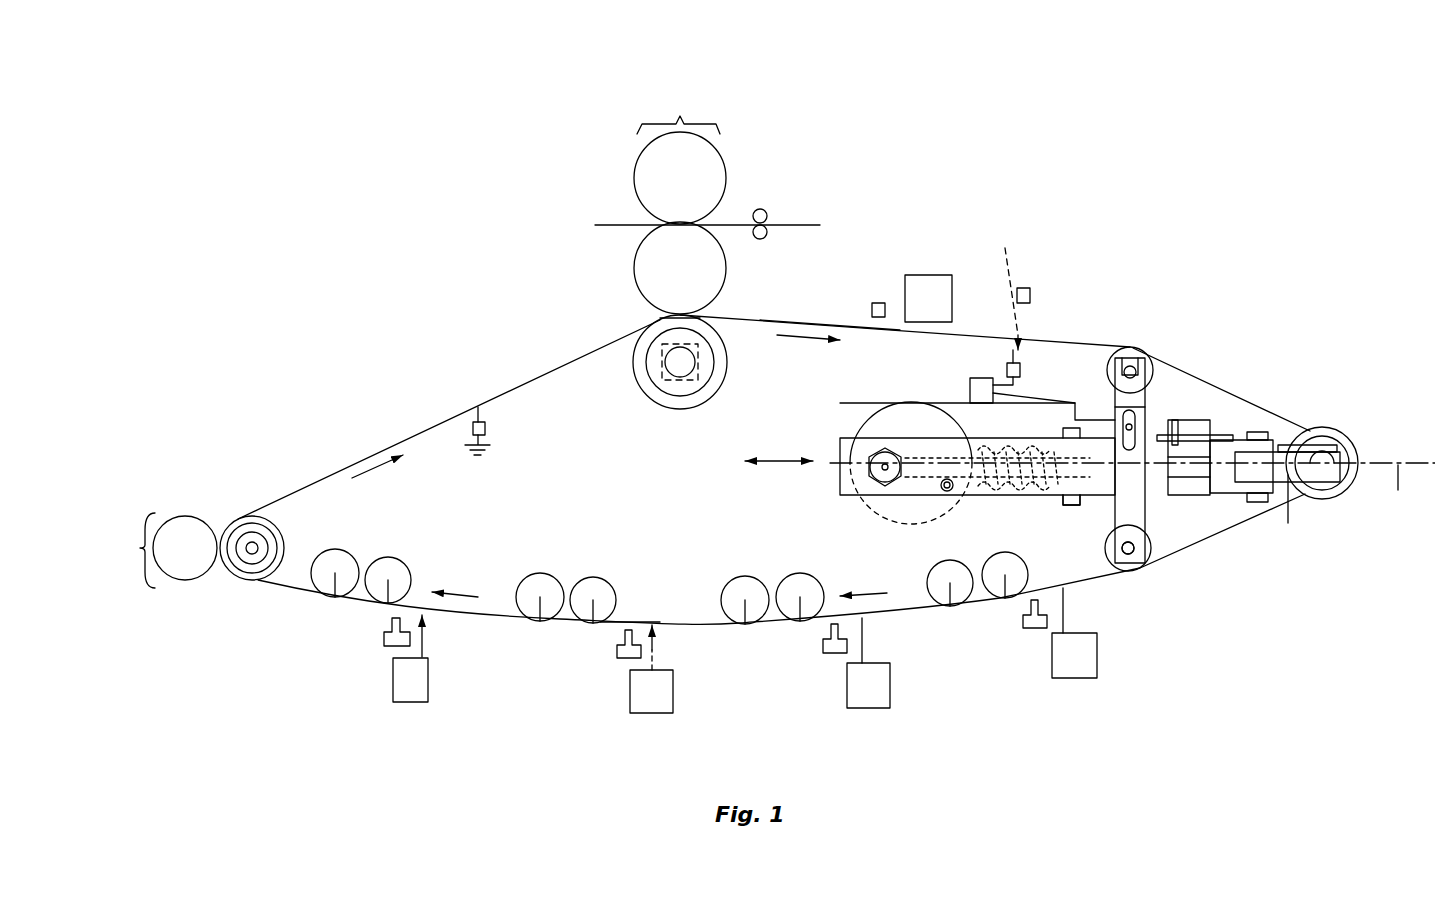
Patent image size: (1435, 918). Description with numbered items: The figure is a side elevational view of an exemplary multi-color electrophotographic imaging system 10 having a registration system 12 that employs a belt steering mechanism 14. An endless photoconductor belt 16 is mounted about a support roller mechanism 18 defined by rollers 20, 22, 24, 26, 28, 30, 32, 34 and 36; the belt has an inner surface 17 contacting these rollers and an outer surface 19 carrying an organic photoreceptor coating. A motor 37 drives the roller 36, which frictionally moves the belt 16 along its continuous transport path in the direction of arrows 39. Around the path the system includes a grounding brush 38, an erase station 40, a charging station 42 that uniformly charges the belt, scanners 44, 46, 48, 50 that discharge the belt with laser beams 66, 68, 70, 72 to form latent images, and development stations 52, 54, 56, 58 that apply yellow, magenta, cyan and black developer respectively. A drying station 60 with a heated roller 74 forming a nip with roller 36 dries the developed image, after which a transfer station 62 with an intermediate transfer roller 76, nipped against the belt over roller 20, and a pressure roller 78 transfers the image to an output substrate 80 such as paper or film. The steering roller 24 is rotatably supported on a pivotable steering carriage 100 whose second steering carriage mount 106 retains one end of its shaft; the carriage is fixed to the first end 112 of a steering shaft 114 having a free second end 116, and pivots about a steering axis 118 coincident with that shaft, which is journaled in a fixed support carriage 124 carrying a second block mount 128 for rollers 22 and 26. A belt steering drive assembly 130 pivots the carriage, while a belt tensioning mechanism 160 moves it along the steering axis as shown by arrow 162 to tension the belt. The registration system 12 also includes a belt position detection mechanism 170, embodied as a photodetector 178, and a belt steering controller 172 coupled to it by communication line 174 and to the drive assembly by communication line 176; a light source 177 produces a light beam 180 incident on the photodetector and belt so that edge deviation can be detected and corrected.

The multi-color electrophotographic imaging system 10 is at (1155, 255).
The registration system 12 is at (1172, 395).
The belt steering mechanism 14 is at (1240, 440).
The photoconductor belt 16 is at (1050, 333).
The inner surface 17 is at (630, 621).
The support roller mechanism 18 is at (660, 407).
The outer surface 19 is at (798, 322).
The roller 20 is at (655, 330).
The roller 22 is at (1135, 350).
The steering roller 24 is at (1340, 455).
The roller 26 is at (1152, 552).
The roller 28 is at (988, 556).
The roller 30 is at (785, 580).
The roller 32 is at (578, 580).
The roller 34 is at (378, 560).
The roller 36 is at (252, 540).
The motor 37 is at (652, 375).
The grounding brush 38 is at (486, 428).
The arrows 39 is at (372, 470).
The erase station 40 is at (873, 303).
The charging station 42 is at (912, 275).
The scanner 44 is at (1092, 678).
The scanner 46 is at (878, 700).
The scanner 48 is at (643, 705).
The scanner 50 is at (412, 702).
The development station 52 is at (1032, 632).
The development station 54 is at (833, 656).
The development station 56 is at (622, 660).
The development station 58 is at (387, 644).
The drying station 60 is at (130, 550).
The transfer station 62 is at (678, 111).
The laser beam 66 is at (1063, 613).
The laser beam 68 is at (862, 645).
The laser beam 70 is at (652, 657).
The laser beam 72 is at (422, 645).
The heated roller 74 is at (188, 516).
The intermediate transfer roller 76 is at (718, 268).
The pressure roller 78 is at (648, 168).
The output substrate 80 is at (785, 225).
The steering carriage 100 is at (1270, 447).
The second steering carriage mount 106 is at (1289, 514).
The first end 112 is at (1250, 447).
The steering shaft 114 is at (1187, 475).
The free second end 116 is at (1074, 502).
The steering axis 118 is at (1401, 495).
The support carriage 124 is at (1140, 510).
The second block mount 128 is at (1118, 518).
The belt steering drive assembly 130 is at (1104, 407).
The belt tensioning mechanism 160 is at (863, 413).
The directional arrow 162 is at (790, 460).
The belt position detection mechanism 170 is at (1003, 369).
The belt steering controller 172 is at (963, 395).
The communication line 174 is at (1017, 393).
The communication line 176 is at (1025, 420).
The light source 177 is at (1025, 289).
The photodetector 178 is at (1015, 360).
The light beam 180 is at (1006, 285).